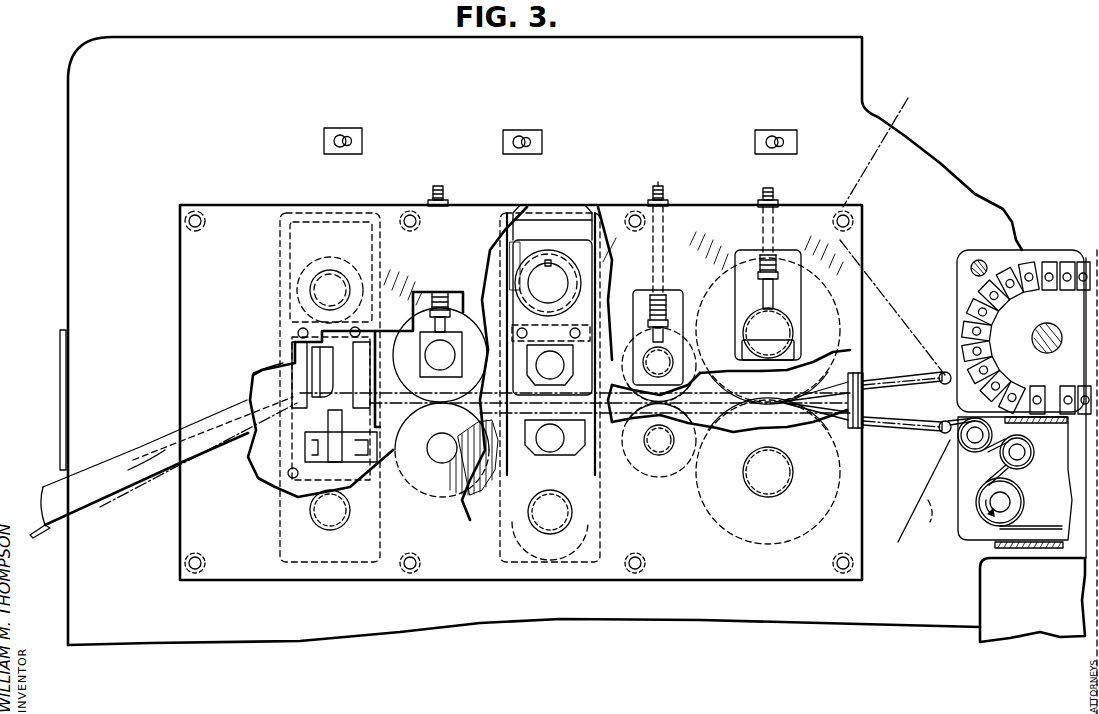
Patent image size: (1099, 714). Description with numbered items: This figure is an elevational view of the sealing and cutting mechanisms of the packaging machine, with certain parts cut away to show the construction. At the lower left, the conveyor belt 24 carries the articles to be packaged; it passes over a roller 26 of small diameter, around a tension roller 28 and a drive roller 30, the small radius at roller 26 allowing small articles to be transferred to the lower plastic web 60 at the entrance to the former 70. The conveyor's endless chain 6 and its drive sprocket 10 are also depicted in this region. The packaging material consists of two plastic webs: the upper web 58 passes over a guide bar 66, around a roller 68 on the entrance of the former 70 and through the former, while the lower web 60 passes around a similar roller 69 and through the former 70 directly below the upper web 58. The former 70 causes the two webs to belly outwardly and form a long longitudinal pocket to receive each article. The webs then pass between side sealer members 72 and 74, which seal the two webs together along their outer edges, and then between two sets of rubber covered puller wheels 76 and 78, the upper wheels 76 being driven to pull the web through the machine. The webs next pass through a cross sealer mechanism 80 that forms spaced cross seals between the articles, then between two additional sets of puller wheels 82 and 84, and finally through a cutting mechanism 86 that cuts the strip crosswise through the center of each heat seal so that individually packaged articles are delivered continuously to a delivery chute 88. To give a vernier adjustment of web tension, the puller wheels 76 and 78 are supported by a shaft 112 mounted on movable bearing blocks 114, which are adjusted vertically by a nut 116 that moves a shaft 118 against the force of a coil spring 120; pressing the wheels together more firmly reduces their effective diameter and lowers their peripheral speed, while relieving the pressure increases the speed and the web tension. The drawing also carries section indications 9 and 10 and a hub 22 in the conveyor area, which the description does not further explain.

The endless chain 6 is at (1050, 262).
The section line 9 is at (782, 182).
The drive sprocket 10 is at (786, 385).
The hub shaft 22 is at (1040, 396).
The conveyor belt 24 is at (1018, 471).
The roller 26 is at (972, 447).
The tension roller 28 is at (1031, 448).
The drive roller 30 is at (1025, 503).
The upper web 58 is at (887, 292).
The lower web 60 is at (924, 491).
The guide bar 66 is at (856, 222).
The roller 68 is at (940, 378).
The roller 69 is at (938, 432).
The former 70 is at (896, 378).
The side sealer member 72 is at (730, 286).
The side sealer member 74 is at (704, 515).
The puller wheels 76 is at (696, 362).
The puller wheels 78 is at (668, 478).
The cross sealer mechanism 80 is at (497, 519).
The puller wheels 82 is at (470, 303).
The puller wheels 84 is at (445, 460).
The cutting mechanism 86 is at (281, 505).
The delivery chute 88 is at (122, 450).
The shaft 112 is at (670, 355).
The movable bearing blocks 114 is at (685, 335).
The nut 116 is at (668, 203).
The shaft 118 is at (658, 186).
The coil spring 120 is at (647, 325).